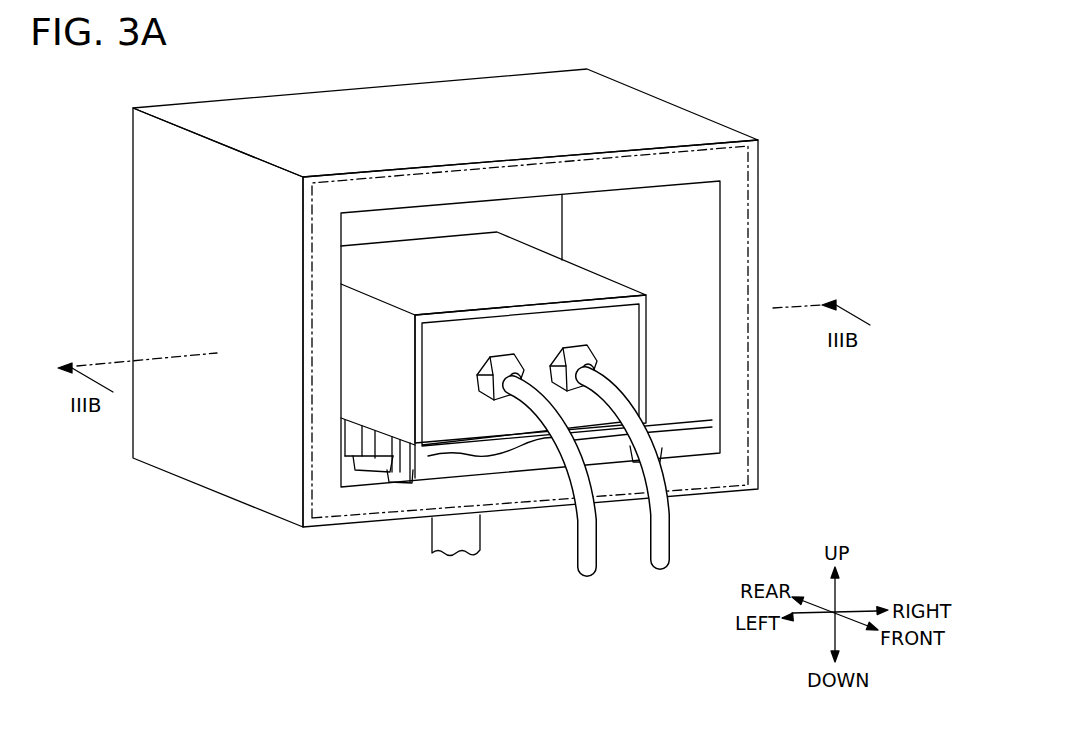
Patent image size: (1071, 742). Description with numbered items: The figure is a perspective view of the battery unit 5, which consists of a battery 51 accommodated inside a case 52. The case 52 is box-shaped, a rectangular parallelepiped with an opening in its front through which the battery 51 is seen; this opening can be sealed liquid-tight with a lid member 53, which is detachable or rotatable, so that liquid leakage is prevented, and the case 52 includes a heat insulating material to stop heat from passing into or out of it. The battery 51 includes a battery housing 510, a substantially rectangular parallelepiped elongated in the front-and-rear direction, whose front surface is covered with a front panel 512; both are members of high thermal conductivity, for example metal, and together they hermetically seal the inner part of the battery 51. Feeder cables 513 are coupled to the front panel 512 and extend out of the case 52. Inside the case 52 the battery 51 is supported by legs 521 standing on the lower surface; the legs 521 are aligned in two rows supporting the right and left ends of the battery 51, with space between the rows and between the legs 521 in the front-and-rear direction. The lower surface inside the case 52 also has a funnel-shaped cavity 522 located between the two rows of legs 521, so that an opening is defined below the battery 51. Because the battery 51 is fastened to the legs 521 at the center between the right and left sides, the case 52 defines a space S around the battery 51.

The battery unit 5 is at (406, 293).
The case 52 is at (463, 102).
The lid member 53 is at (303, 242).
The space S is at (640, 239).
The battery 51 is at (501, 408).
The battery housing 510 is at (377, 358).
The front panel 512 is at (627, 350).
The legs 521 is at (383, 448).
The cavity 522 is at (518, 447).
The feeder cables 513 is at (663, 533).